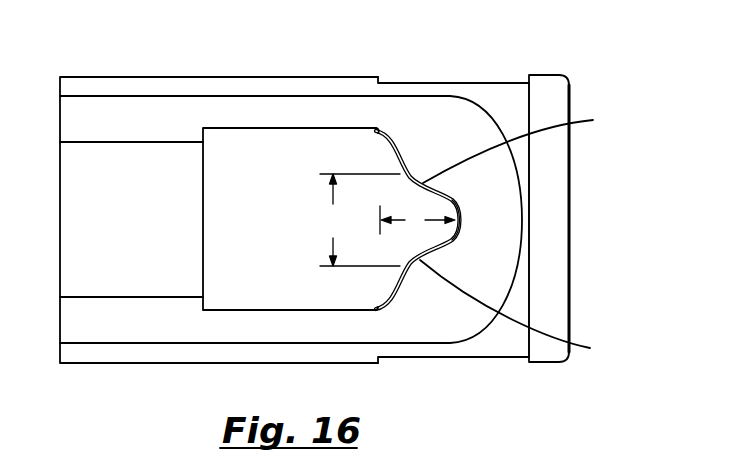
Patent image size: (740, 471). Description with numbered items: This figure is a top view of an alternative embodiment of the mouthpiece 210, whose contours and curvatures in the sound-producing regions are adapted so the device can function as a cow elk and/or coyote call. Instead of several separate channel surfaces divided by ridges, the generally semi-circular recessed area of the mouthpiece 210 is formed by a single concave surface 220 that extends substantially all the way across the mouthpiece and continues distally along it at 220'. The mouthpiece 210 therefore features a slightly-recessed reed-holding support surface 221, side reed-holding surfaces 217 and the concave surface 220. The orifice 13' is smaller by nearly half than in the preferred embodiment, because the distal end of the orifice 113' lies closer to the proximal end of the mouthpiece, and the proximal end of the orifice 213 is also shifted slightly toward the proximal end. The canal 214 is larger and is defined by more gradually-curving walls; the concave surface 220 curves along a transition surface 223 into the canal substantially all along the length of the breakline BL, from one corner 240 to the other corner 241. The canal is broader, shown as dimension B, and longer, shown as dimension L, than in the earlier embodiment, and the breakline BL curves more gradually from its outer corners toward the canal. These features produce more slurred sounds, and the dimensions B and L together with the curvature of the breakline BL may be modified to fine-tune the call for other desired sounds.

The concave surface distal extension 220' is at (255, 217).
The mouthpiece 210 is at (396, 76).
The proximal end of the orifice 213 is at (410, 200).
The canal 214 is at (440, 208).
The side reed-holding surfaces 217 is at (478, 358).
The concave surface 220 is at (544, 219).
The reed-holding support surface 221 is at (511, 322).
The transition surface 223 is at (530, 233).
The distal end of the orifice 113' is at (289, 219).
The corner 240 is at (365, 132).
The corner 241 is at (380, 307).
The orifice 13' is at (399, 324).
The canal breadth dimension B is at (360, 220).
The canal length dimension L is at (417, 220).
The breakline BL is at (397, 163).